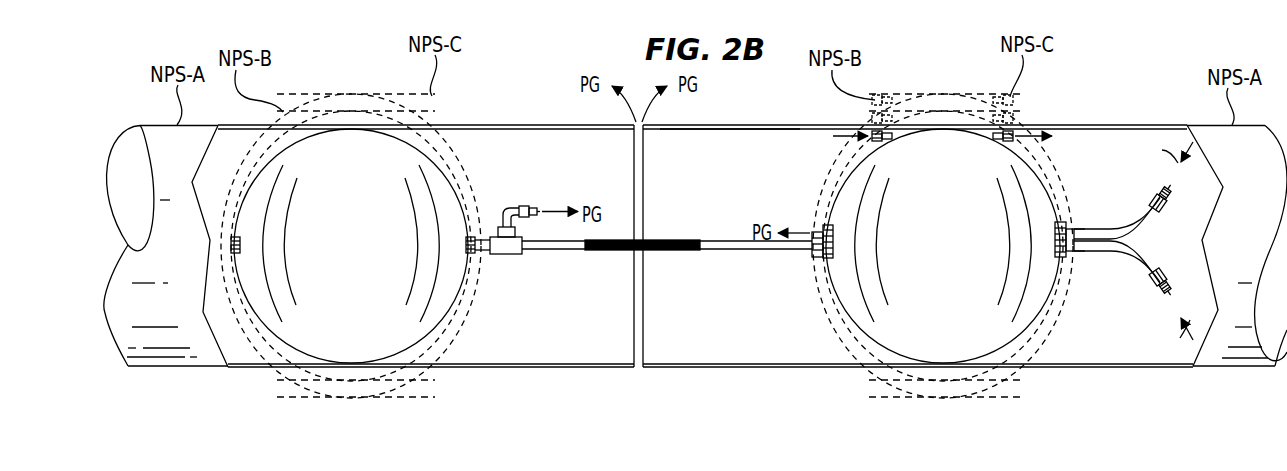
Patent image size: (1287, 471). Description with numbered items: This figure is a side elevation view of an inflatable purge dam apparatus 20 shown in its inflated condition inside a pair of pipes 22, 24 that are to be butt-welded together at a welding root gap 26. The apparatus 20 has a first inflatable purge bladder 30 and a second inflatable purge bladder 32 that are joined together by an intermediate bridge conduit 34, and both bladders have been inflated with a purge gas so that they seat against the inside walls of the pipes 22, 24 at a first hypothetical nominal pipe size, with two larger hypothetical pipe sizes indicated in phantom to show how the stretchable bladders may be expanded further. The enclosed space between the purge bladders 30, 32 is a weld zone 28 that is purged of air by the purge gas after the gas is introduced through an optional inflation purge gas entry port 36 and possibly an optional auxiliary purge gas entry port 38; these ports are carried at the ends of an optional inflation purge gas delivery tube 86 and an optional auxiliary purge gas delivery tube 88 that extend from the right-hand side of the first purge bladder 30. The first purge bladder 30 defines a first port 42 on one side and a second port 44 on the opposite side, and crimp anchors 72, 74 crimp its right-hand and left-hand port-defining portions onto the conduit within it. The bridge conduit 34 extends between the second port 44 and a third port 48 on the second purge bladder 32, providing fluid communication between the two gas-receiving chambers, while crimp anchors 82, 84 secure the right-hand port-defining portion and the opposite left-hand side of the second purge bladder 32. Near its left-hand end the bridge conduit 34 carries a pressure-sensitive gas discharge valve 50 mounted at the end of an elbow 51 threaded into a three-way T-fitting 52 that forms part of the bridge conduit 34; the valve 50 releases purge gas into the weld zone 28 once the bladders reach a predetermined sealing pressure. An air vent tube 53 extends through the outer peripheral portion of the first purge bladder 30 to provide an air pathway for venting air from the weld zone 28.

The inflatable purge dam apparatus 20 is at (1092, 160).
The pipe 22 is at (1220, 345).
The pipe 24 is at (205, 350).
The welding root gap 26 is at (637, 370).
The weld zone 28 is at (734, 178).
The first inflatable purge bladder 30 is at (990, 325).
The second inflatable purge bladder 32 is at (405, 330).
The intermediate bridge conduit 34 is at (728, 251).
The inflation purge gas entry port 36 is at (1166, 303).
The auxiliary purge gas entry port 38 is at (1176, 186).
The first port 42 is at (1072, 253).
The second port 44 is at (818, 258).
The third port 48 is at (478, 256).
The pressure-sensitive gas discharge valve 50 is at (530, 206).
The elbow 51 is at (506, 208).
The three-way T-fitting 52 is at (509, 255).
The air vent tube 53 is at (882, 142).
The crimp anchor 72 is at (1061, 222).
The crimp anchor 74 is at (826, 226).
The crimp anchor 82 is at (472, 236).
The crimp anchor 84 is at (236, 236).
The inflation purge gas delivery tube 86 is at (1148, 272).
The auxiliary purge gas delivery tube 88 is at (1148, 212).